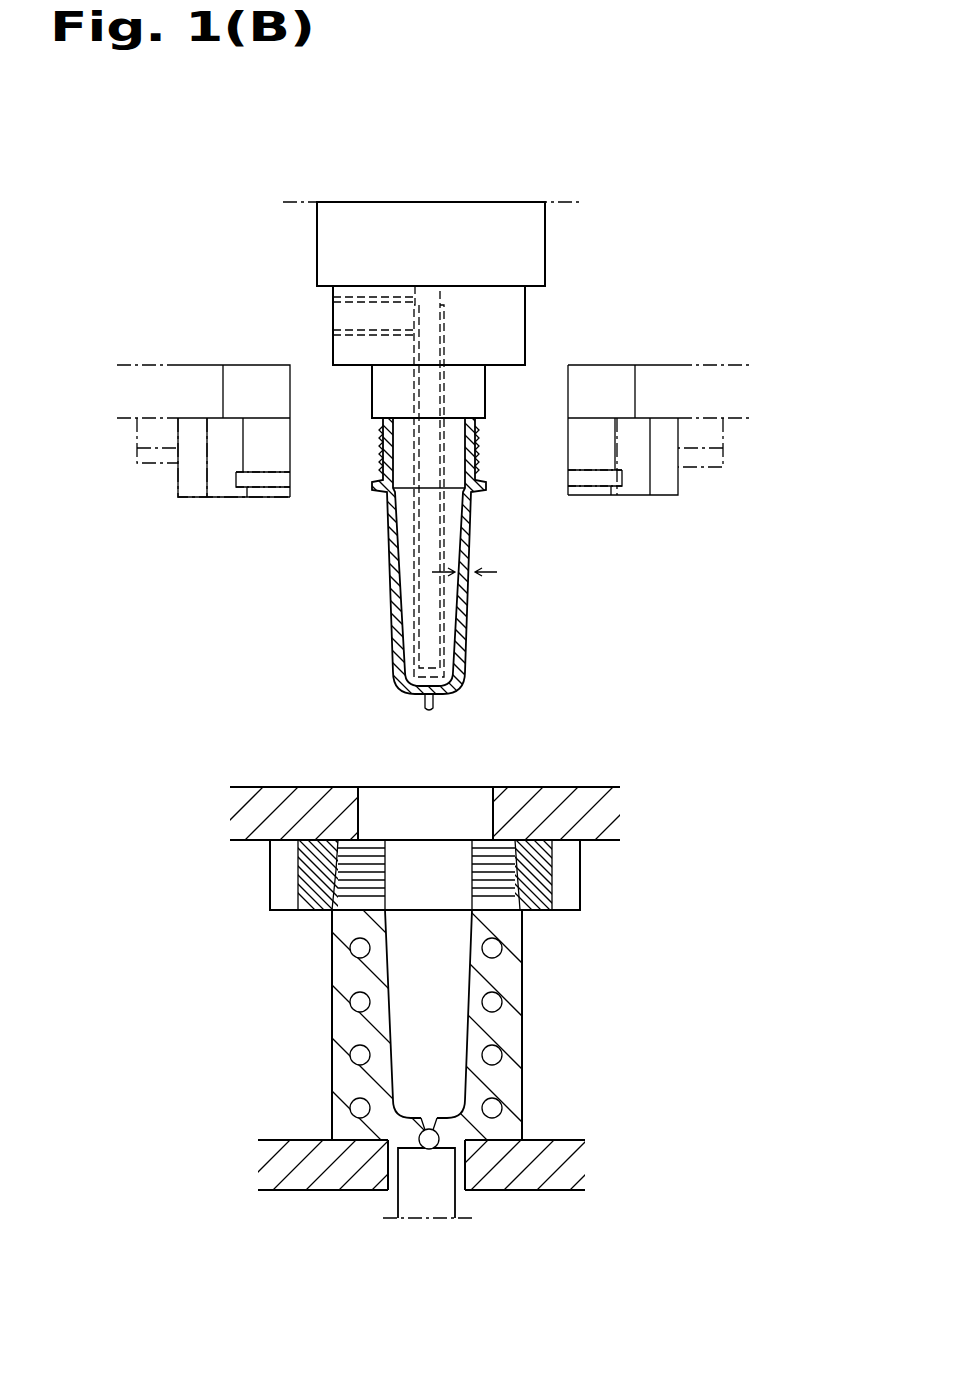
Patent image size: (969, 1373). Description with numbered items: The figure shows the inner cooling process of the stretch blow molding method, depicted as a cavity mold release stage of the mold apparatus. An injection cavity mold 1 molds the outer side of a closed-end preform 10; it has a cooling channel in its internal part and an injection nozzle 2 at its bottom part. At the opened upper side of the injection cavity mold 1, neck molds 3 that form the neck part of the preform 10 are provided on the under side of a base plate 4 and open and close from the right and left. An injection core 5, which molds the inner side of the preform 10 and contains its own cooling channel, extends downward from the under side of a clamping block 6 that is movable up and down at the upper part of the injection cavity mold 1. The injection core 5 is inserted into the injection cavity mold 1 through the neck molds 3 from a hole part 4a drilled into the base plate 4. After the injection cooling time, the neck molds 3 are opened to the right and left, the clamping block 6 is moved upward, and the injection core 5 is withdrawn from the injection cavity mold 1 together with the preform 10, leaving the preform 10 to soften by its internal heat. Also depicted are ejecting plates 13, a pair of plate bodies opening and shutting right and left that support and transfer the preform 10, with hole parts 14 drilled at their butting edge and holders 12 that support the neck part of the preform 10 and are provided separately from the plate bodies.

The injection cavity mold 1 is at (355, 978).
The injection nozzle 2 is at (425, 1150).
The neck molds 3 is at (318, 870).
The base plate 4 is at (325, 810).
The hole part 4a is at (462, 812).
The injection core 5 is at (428, 560).
The clamping block 6 is at (357, 238).
The closed-end preform 10 is at (470, 600).
The holders 12 is at (222, 462).
The ejecting plates 13 is at (178, 398).
The hole parts 14 is at (272, 390).